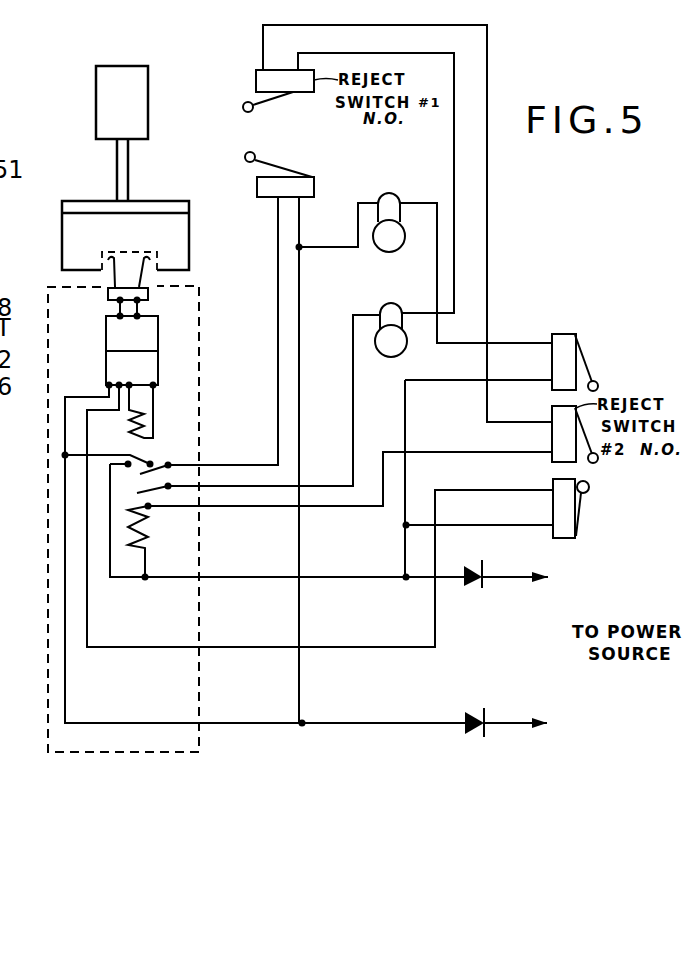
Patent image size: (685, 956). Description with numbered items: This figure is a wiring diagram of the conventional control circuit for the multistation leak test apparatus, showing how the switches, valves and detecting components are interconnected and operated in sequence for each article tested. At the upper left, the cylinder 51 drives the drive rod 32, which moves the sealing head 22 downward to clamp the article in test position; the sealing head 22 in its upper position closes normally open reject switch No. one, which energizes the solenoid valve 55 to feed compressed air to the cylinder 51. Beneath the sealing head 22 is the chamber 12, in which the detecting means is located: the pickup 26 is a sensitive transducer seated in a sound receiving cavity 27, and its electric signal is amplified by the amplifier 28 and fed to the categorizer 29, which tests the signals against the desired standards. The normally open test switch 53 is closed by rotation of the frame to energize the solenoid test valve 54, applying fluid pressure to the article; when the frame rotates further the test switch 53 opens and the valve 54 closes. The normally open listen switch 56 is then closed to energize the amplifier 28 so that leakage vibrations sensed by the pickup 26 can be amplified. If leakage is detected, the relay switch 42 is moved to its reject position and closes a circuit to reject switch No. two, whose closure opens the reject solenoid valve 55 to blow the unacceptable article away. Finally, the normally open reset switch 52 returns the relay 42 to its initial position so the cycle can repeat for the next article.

The cylinder 51 is at (96, 92).
The drive rod 32 is at (117, 165).
The sealing head 22 is at (167, 204).
The sound receiving cavity 27 is at (122, 262).
The chamber 12 is at (157, 205).
The pickup 26 is at (108, 295).
The amplifier 28 is at (118, 331).
The categorizer 29 is at (150, 368).
The rejection relay 42 is at (172, 514).
The reset switch 52 is at (312, 178).
The solenoid test valve 54 is at (390, 195).
The solenoid valve 55 is at (388, 306).
The test switch 53 is at (565, 340).
The listen switch 56 is at (577, 530).